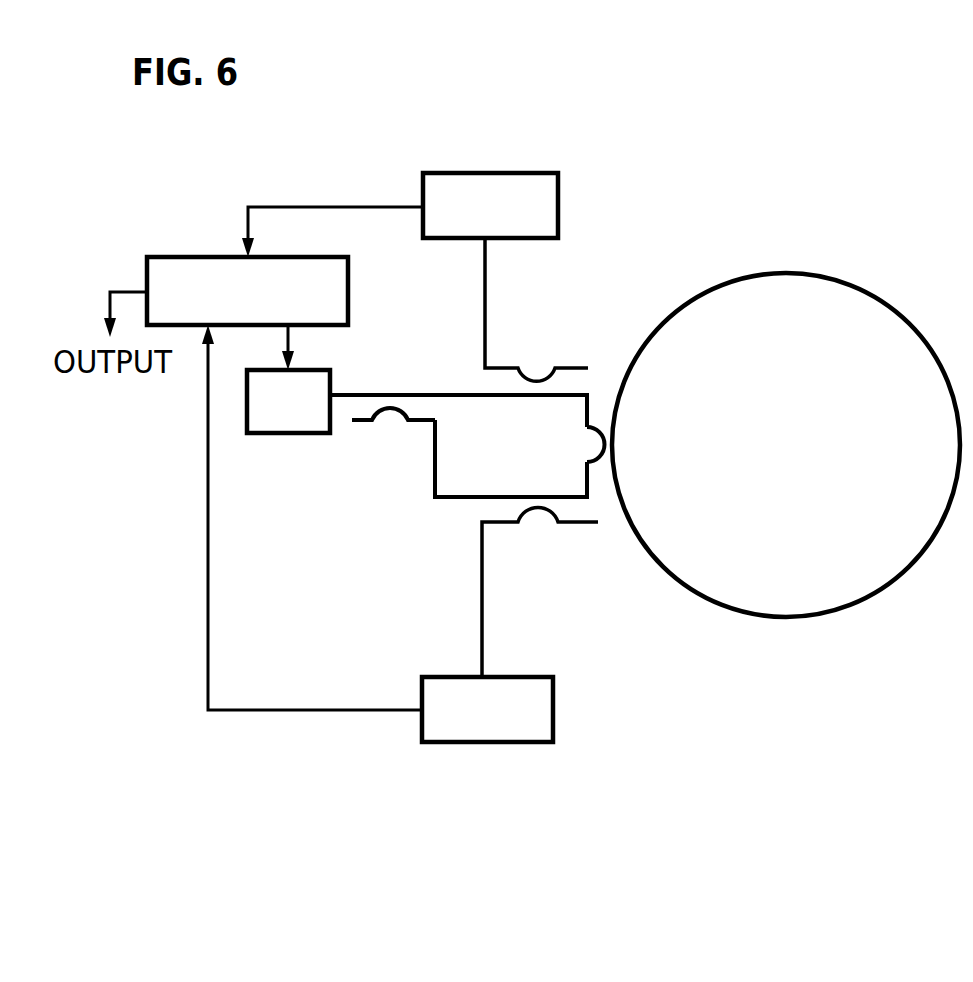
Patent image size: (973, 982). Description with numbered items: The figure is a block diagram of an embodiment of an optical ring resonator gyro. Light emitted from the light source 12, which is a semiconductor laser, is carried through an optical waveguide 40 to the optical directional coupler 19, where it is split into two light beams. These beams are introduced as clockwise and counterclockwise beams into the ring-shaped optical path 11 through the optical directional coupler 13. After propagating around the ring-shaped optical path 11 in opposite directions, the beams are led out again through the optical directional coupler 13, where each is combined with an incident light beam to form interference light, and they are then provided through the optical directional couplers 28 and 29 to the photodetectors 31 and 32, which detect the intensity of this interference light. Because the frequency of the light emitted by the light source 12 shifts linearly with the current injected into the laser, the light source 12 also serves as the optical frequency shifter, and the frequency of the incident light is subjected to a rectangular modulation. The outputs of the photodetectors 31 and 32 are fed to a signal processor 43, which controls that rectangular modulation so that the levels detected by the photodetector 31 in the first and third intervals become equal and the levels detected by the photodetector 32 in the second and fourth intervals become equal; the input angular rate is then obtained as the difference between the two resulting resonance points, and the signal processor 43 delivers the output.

The ring-shaped optical path 11 is at (876, 590).
The light source 12 is at (332, 380).
The optical directional coupler 13 is at (606, 442).
The optical directional coupler 19 is at (393, 418).
The optical directional coupler 28 is at (537, 513).
The optical directional coupler 29 is at (540, 368).
The photodetector 31 is at (520, 677).
The photodetector 32 is at (530, 173).
The optical waveguide 40 is at (420, 393).
The signal processor 43 is at (325, 257).